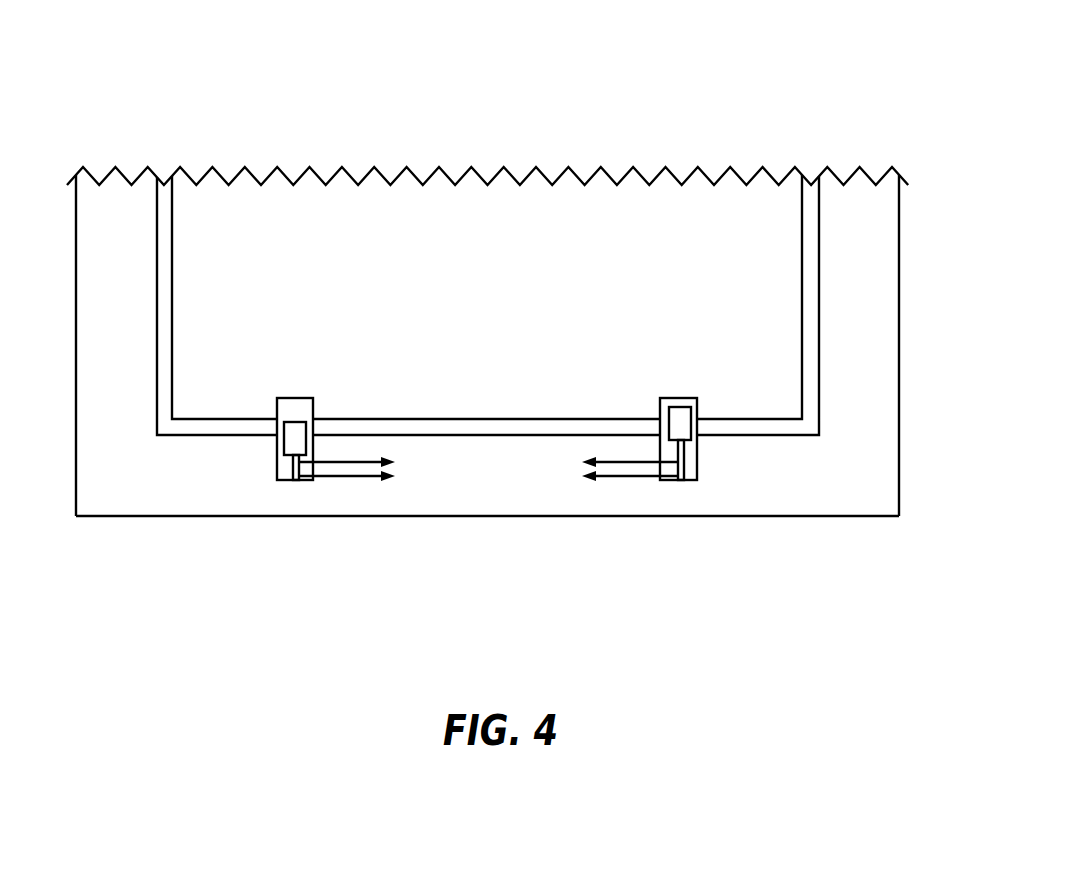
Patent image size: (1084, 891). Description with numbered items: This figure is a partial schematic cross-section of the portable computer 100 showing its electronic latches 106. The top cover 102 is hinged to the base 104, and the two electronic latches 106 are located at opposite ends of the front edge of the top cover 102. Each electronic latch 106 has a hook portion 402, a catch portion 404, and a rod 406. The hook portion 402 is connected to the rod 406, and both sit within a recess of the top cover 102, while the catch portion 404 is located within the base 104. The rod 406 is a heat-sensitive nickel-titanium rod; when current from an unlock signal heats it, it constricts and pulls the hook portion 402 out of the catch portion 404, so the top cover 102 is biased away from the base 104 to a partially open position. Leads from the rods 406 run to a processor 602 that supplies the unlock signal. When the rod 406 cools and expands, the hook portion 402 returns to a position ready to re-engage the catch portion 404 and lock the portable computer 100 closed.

The portable computer 100 is at (630, 90).
The top cover 102 is at (530, 502).
The base 104 is at (523, 419).
The electronic latches 106 is at (267, 405).
The hook portion 402 is at (290, 432).
The catch portion 404 is at (295, 410).
The rod 406 is at (294, 478).
The processor 602 is at (488, 469).